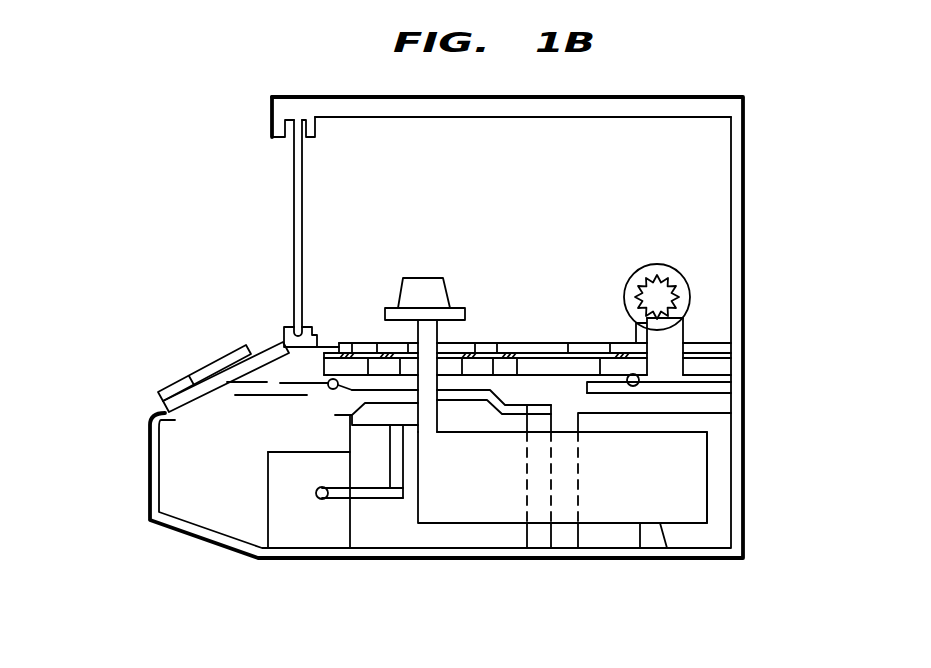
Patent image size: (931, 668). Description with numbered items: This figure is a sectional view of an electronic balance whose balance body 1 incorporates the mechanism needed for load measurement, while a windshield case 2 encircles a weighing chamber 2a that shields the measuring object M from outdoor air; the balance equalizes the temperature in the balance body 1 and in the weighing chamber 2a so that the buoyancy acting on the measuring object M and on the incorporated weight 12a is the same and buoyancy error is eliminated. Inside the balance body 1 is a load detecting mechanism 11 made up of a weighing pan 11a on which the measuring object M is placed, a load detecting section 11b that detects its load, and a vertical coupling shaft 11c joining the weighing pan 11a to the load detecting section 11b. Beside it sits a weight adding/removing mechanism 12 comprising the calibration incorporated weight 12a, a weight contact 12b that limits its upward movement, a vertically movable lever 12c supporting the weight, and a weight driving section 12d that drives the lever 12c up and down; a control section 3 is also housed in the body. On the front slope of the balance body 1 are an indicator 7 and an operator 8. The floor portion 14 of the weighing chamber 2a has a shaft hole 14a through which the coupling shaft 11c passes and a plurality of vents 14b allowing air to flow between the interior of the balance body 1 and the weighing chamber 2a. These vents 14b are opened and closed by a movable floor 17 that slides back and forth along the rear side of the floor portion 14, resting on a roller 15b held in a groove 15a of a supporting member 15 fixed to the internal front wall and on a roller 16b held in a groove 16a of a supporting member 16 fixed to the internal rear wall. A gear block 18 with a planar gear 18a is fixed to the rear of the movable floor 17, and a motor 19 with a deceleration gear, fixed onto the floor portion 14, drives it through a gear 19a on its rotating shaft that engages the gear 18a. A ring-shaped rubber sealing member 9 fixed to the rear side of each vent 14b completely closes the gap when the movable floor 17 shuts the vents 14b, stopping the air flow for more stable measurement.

The balance body 1 is at (768, 540).
The windshield case 2 is at (765, 155).
The weighing chamber 2a is at (700, 140).
The control section 3 is at (718, 483).
The indicator 7 is at (242, 349).
The operator 8 is at (160, 393).
The sealing member 9 is at (339, 352).
The load detecting mechanism 11 is at (438, 535).
The weighing pan 11a is at (442, 332).
The load detecting section 11b is at (632, 523).
The coupling shaft 11c is at (410, 334).
The weight adding/removing mechanism 12 is at (258, 484).
The incorporated weight 12a is at (300, 470).
The weight contact 12b is at (335, 470).
The lever 12c is at (370, 500).
The weight driving section 12d is at (295, 548).
The floor portion 14 is at (712, 344).
The shaft hole 14a is at (448, 343).
The vents 14b is at (352, 345).
The supporting member 15 is at (153, 415).
The groove 15a is at (327, 386).
The roller 15b is at (347, 403).
The supporting member 16 is at (713, 387).
The groove 16a is at (644, 386).
The roller 16b is at (640, 376).
The movable floor 17 is at (284, 346).
The gear block 18 is at (686, 334).
The gear 18a is at (688, 320).
The motor 19 is at (690, 293).
The gear 19a is at (652, 263).
The measuring object M is at (433, 277).